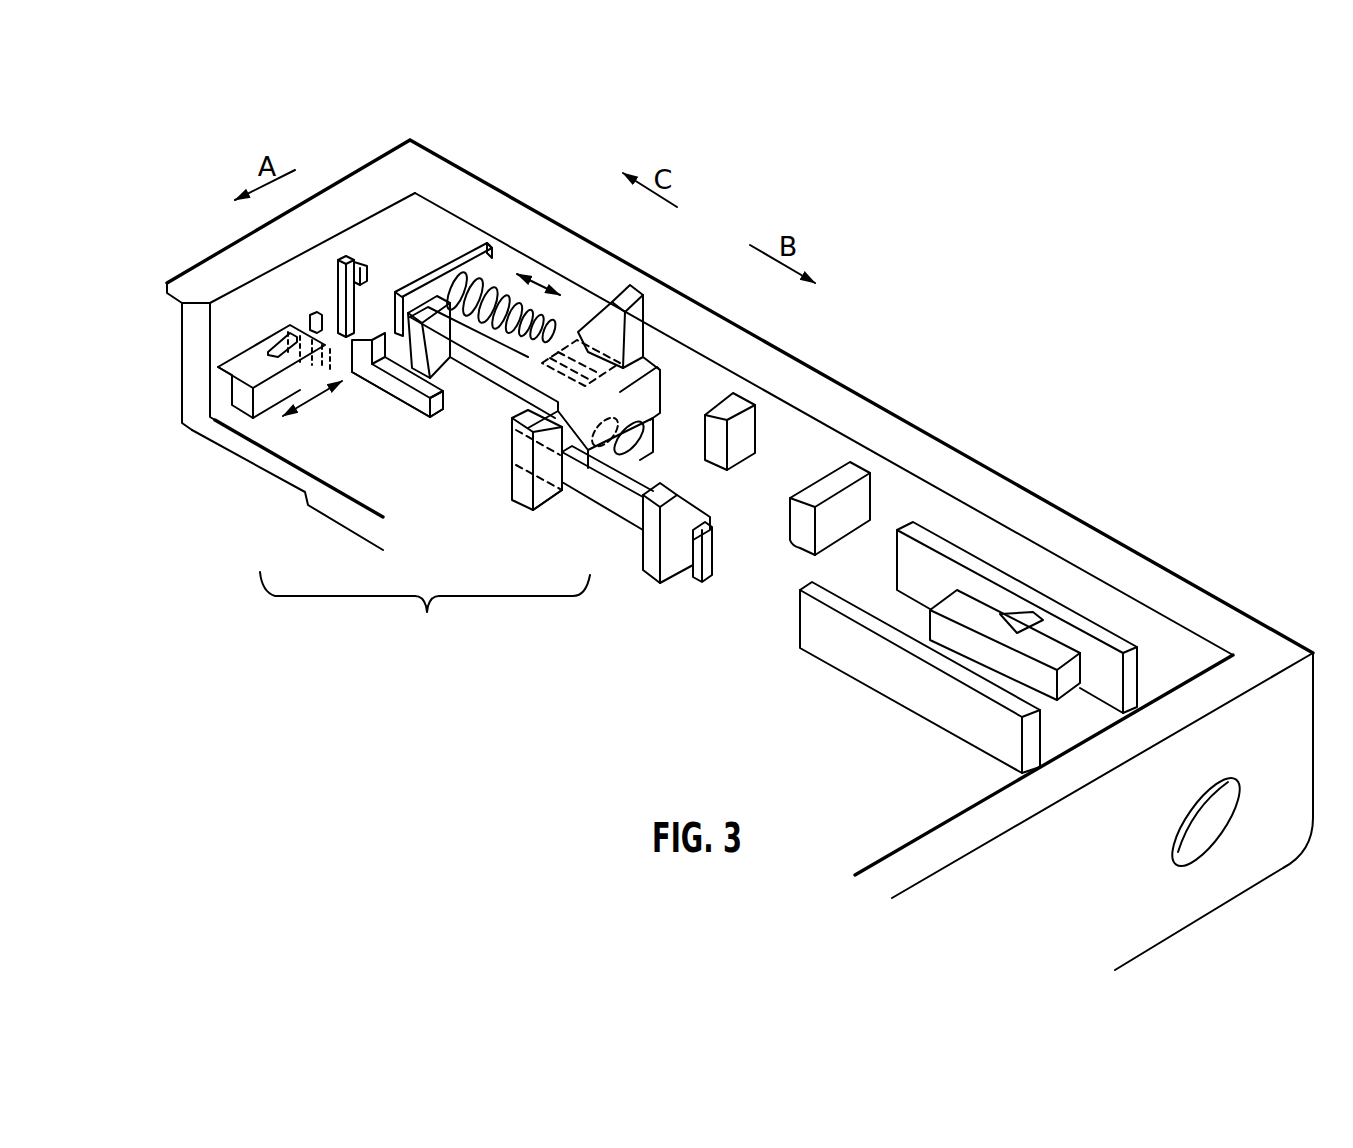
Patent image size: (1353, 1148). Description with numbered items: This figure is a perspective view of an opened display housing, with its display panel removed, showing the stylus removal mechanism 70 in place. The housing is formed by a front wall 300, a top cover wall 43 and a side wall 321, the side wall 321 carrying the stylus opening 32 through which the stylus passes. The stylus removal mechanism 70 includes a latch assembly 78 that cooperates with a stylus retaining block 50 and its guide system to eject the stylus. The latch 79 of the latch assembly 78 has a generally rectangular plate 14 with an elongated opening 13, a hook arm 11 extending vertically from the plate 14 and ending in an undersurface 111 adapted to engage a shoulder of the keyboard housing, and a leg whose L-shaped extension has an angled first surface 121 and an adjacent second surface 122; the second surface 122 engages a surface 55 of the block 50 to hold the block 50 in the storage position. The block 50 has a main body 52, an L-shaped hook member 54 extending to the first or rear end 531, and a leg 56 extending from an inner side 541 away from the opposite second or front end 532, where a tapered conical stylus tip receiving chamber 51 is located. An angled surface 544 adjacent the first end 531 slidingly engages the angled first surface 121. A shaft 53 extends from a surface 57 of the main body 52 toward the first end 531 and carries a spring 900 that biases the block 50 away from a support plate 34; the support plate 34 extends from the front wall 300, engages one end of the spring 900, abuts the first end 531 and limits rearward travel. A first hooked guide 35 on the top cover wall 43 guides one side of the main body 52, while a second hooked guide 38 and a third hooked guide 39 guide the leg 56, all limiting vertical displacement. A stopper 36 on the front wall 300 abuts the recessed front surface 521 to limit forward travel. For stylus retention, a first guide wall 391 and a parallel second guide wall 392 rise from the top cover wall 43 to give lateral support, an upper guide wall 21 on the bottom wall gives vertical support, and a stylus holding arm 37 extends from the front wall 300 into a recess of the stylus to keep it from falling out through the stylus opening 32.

The front wall 300 is at (1025, 508).
The side wall 321 is at (1173, 907).
The stylus opening 32 is at (1222, 778).
The rectangular plate 14 is at (225, 380).
The top cover wall 43 is at (210, 426).
The latch assembly 78 is at (258, 325).
The elongated opening 13 is at (303, 332).
The angled surface 544 is at (400, 362).
The hook arm 11 is at (344, 257).
The undersurface 111 is at (377, 280).
The latch 79 is at (397, 408).
The second surface 122 is at (412, 412).
The angled first surface 121 is at (483, 398).
The L-shaped hook member 54 is at (495, 396).
The shaft 53 is at (567, 317).
The first end 531 is at (410, 310).
The surface 55 is at (435, 290).
The support plate 34 is at (488, 243).
The spring 900 is at (502, 293).
The surface 57 is at (578, 318).
The first hooked guide 35 is at (628, 293).
The main body 52 is at (652, 358).
The stylus retaining block 50 is at (660, 352).
The recessed front surface 521 is at (650, 395).
The stylus tip receiving chamber 51 is at (655, 432).
The second end 532 is at (648, 462).
The inner side 541 is at (512, 410).
The third hooked guide 39 is at (547, 497).
The leg 56 is at (608, 512).
The second hooked guide 38 is at (672, 568).
The stopper 36 is at (745, 432).
The stylus holding arm 37 is at (857, 470).
The first guide wall 391 is at (937, 547).
The second guide wall 392 is at (812, 626).
The upper guide wall 21 is at (1047, 637).
The stylus removal mechanism 70 is at (425, 612).